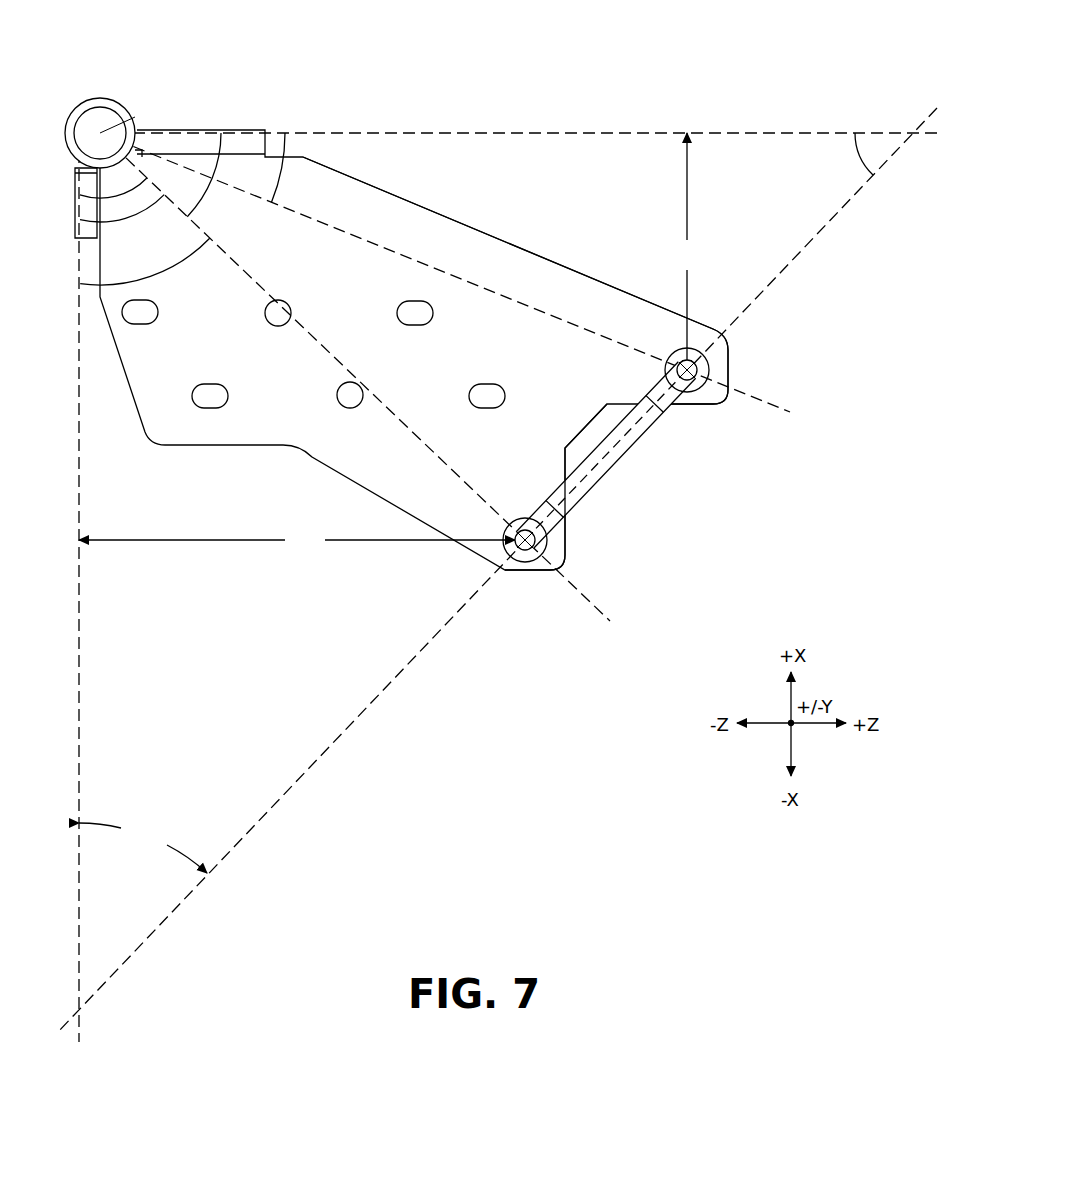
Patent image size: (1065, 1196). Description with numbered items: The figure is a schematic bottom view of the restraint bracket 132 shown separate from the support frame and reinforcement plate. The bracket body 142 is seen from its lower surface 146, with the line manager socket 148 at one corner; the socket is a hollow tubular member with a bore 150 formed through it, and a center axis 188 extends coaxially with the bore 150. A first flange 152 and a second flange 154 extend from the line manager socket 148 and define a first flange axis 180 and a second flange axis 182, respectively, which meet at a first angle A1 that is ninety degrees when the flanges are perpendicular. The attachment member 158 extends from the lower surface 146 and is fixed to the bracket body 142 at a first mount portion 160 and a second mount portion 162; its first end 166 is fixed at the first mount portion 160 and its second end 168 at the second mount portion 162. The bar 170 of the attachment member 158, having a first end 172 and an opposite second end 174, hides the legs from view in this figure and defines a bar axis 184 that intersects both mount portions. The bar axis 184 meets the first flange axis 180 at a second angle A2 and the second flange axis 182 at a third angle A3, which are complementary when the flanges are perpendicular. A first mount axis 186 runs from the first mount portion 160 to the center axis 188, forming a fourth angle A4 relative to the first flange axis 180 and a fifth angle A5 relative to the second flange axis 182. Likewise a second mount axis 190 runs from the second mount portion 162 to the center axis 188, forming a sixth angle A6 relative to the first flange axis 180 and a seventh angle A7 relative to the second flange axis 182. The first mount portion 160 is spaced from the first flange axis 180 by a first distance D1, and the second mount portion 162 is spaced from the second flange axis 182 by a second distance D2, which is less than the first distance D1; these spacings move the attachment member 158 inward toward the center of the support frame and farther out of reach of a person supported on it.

The restraint bracket 132 is at (455, 108).
The bracket body 142 is at (577, 252).
The lower surface 146 is at (478, 228).
The line manager socket 148 is at (103, 97).
The bore 150 is at (97, 128).
The first flange 152 is at (72, 240).
The second flange 154 is at (260, 130).
The attachment member 158 is at (608, 483).
The first mount portion 160 is at (535, 568).
The second mount portion 162 is at (695, 398).
The first end 166 is at (515, 560).
The second end 168 is at (710, 368).
The bar 170 is at (605, 455).
The first end 172 is at (520, 530).
The second end 174 is at (682, 365).
The first flange axis 180 is at (77, 462).
The second flange axis 182 is at (530, 133).
The bar axis 184 is at (290, 790).
The first mount axis 186 is at (405, 420).
The center axis 188 is at (118, 118).
The second mount axis 190 is at (523, 305).
The first angle A1 is at (88, 198).
The second angle A2 is at (143, 848).
The third angle A3 is at (858, 162).
The fourth angle A4 is at (118, 222).
The fifth angle A5 is at (218, 138).
The sixth angle A6 is at (178, 273).
The seventh angle A7 is at (280, 186).
The first distance D1 is at (297, 541).
The second distance D2 is at (689, 251).